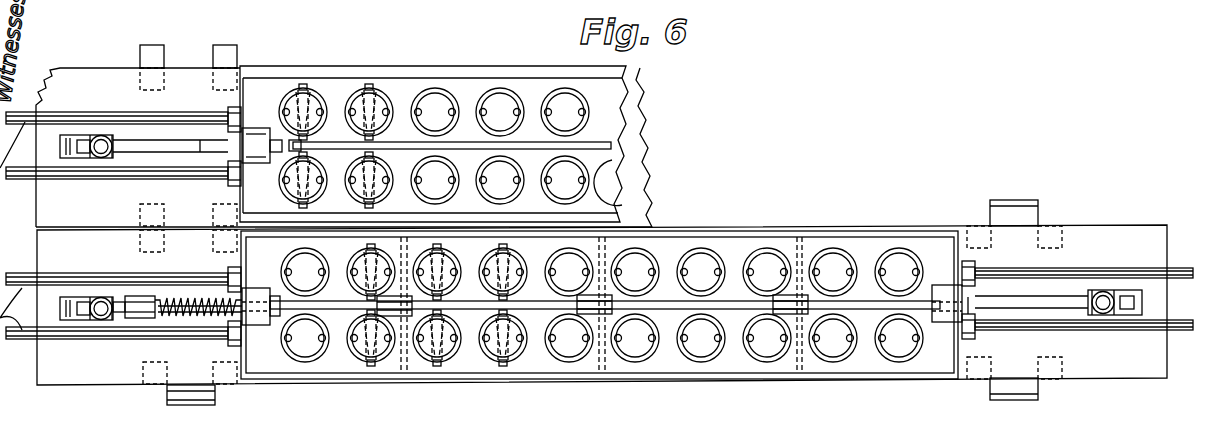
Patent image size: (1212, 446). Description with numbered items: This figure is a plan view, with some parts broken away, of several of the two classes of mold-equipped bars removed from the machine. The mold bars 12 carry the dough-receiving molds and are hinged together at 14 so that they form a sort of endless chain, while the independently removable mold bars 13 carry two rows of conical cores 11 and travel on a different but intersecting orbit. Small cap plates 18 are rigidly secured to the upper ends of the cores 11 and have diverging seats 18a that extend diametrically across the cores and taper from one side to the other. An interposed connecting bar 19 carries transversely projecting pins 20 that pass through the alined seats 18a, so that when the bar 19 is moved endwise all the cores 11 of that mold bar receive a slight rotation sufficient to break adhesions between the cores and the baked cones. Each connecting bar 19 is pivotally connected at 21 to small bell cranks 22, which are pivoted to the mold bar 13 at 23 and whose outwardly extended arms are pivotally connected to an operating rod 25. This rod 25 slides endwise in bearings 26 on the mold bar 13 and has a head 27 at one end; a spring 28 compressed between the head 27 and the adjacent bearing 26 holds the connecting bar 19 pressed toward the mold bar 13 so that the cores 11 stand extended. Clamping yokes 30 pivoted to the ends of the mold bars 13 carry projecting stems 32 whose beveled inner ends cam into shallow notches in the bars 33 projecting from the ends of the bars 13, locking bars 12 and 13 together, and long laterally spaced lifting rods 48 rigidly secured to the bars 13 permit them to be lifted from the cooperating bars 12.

The conical cores 11 is at (624, 188).
The mold bars 12 is at (632, 113).
The mold bars 13 is at (887, 207).
The hinge connection 14 is at (218, 52).
The cap plates 18 is at (510, 108).
The diverging seats 18a is at (371, 354).
The connecting bar 19 is at (606, 146).
The pins 20 is at (370, 90).
The pivotal connection 21 is at (778, 316).
The bell cranks 22 is at (618, 316).
The pivot 23 is at (799, 376).
The operating rod 25 is at (868, 312).
The bearings 26 is at (257, 128).
The head 27 is at (140, 319).
The spring 28 is at (197, 320).
The clamping yokes 30 is at (1093, 293).
The projecting stems 32 is at (102, 158).
The bars 33 is at (167, 146).
The lifting rods 48 is at (1186, 280).